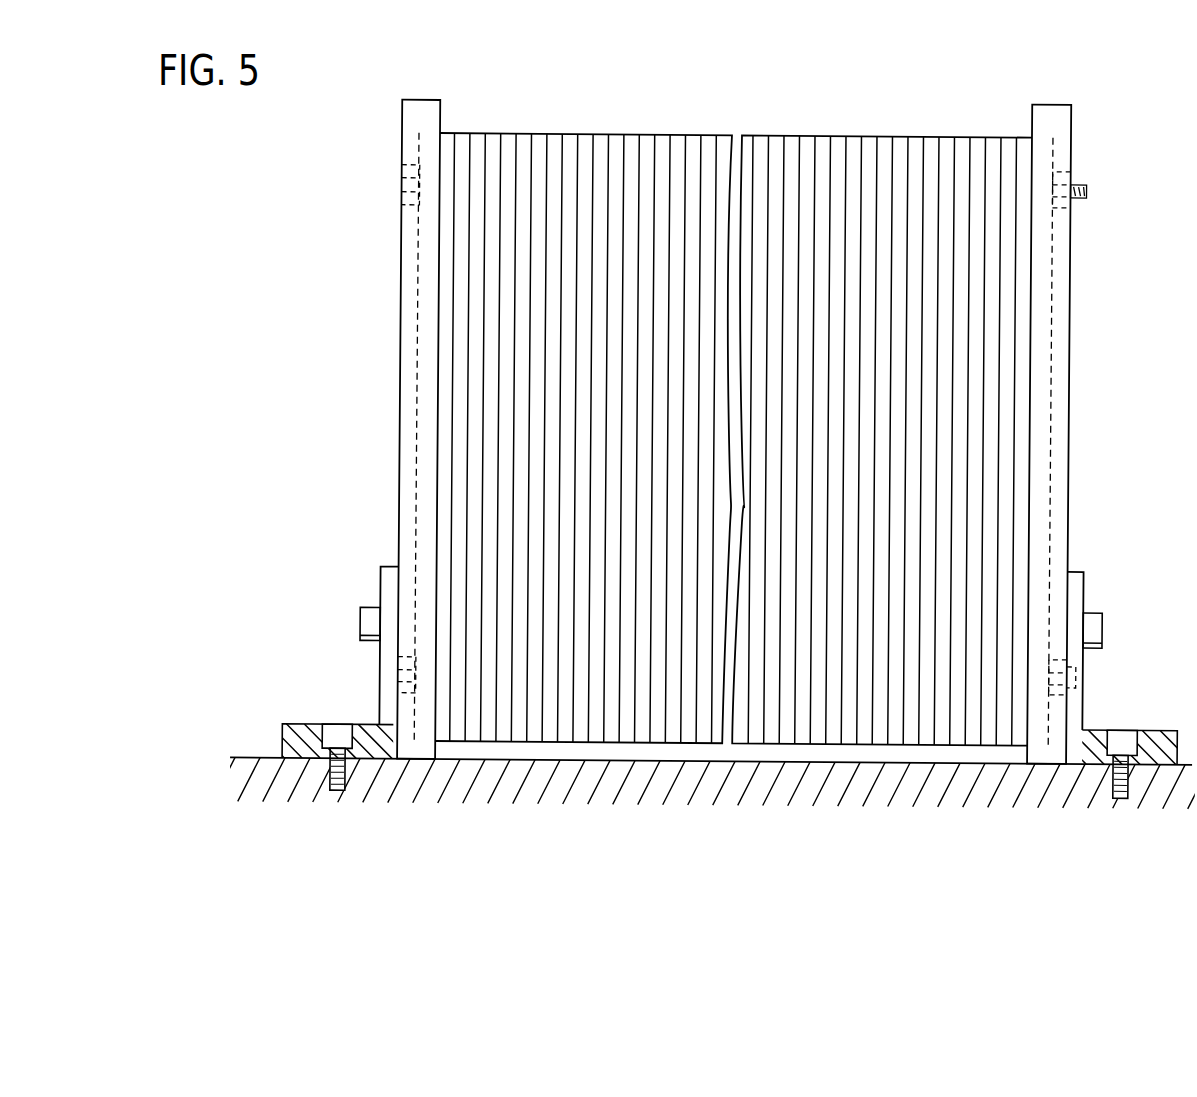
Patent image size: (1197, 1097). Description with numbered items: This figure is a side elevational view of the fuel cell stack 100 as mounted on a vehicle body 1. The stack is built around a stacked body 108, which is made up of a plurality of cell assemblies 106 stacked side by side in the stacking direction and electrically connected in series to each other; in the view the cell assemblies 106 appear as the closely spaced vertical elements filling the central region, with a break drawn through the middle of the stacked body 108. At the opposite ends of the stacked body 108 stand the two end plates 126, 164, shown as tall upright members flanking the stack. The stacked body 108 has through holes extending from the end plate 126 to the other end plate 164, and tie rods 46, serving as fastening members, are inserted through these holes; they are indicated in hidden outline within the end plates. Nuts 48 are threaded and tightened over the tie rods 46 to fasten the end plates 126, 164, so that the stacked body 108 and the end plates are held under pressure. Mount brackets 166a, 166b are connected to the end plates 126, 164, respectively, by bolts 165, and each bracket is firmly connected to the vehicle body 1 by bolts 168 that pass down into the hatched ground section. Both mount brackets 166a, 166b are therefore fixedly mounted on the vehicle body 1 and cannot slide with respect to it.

The vehicle body 1 is at (243, 776).
The fuel cell stack 100 is at (432, 68).
The cell assembly 106 is at (783, 128).
The stacked body 108 is at (588, 157).
The end plate 126 is at (412, 122).
The end plate 164 is at (1050, 116).
The tie rod 46 is at (406, 190).
The nut 48 is at (1062, 183).
The bolt 165 is at (369, 625).
The mount bracket 166a is at (391, 597).
The mount bracket 166b is at (1081, 592).
The bolt 168 is at (333, 736).